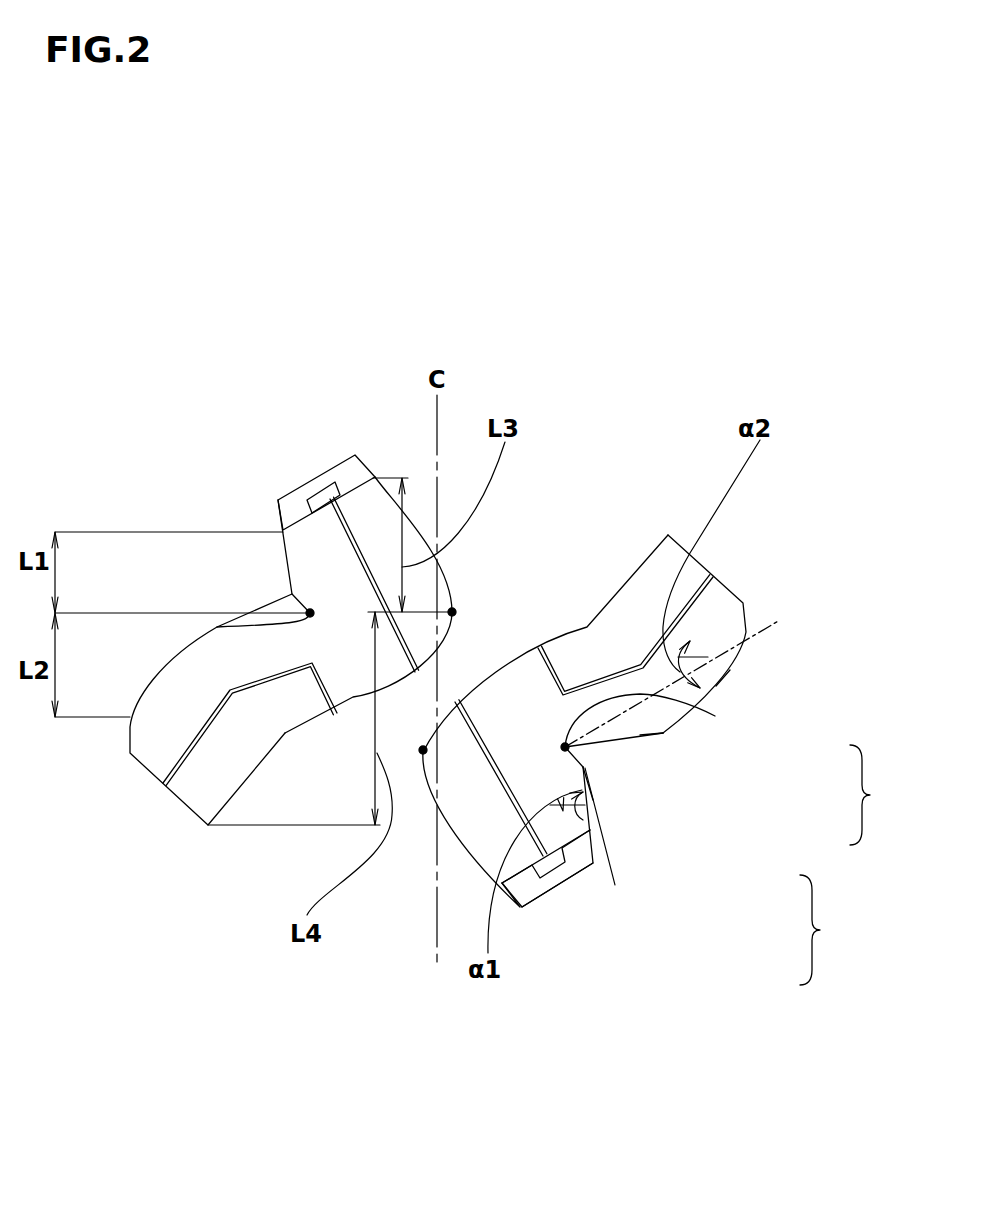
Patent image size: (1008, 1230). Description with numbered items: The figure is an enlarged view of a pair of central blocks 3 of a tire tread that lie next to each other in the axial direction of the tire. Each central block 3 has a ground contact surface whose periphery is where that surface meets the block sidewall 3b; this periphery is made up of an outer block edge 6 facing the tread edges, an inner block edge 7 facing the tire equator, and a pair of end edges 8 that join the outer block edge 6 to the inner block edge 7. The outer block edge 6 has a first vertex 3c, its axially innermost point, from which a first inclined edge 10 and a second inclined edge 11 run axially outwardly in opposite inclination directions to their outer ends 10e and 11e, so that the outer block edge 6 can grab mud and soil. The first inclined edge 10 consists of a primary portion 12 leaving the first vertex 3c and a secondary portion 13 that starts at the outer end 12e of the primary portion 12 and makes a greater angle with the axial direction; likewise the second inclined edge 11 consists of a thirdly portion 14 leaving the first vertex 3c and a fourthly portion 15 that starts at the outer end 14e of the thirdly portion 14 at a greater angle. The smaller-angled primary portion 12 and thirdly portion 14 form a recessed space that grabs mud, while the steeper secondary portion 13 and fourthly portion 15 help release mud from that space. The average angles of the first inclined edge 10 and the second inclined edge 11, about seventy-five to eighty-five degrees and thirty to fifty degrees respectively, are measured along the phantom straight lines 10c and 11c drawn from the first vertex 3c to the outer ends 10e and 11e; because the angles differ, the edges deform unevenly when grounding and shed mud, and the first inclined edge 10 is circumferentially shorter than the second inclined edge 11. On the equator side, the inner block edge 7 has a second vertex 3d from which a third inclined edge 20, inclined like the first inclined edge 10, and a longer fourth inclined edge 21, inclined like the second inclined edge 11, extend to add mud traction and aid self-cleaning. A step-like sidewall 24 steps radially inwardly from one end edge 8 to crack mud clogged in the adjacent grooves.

The central block 3 is at (487, 692).
The block sidewall 3b is at (643, 667).
The first vertex 3c is at (310, 612).
The second vertex 3d is at (452, 612).
The outer block edge 6 is at (716, 686).
The inner block edge 7 is at (637, 573).
The end edge 8 is at (312, 550).
The first inclined edge 10 is at (505, 813).
The straight line 10c is at (612, 880).
The outer end 10e is at (593, 785).
The second inclined edge 11 is at (487, 615).
The straight line 11c is at (780, 620).
The outer end 11e is at (743, 647).
The primary portion 12 is at (590, 774).
The outer end 12e is at (587, 767).
The secondary portion 13 is at (595, 790).
The thirdly portion 14 is at (587, 767).
The outer end 14e is at (652, 735).
The fourthly portion 15 is at (728, 718).
The third inclined edge 20 is at (450, 597).
The fourth inclined edge 21 is at (246, 777).
The step-like sidewall 24 is at (303, 480).